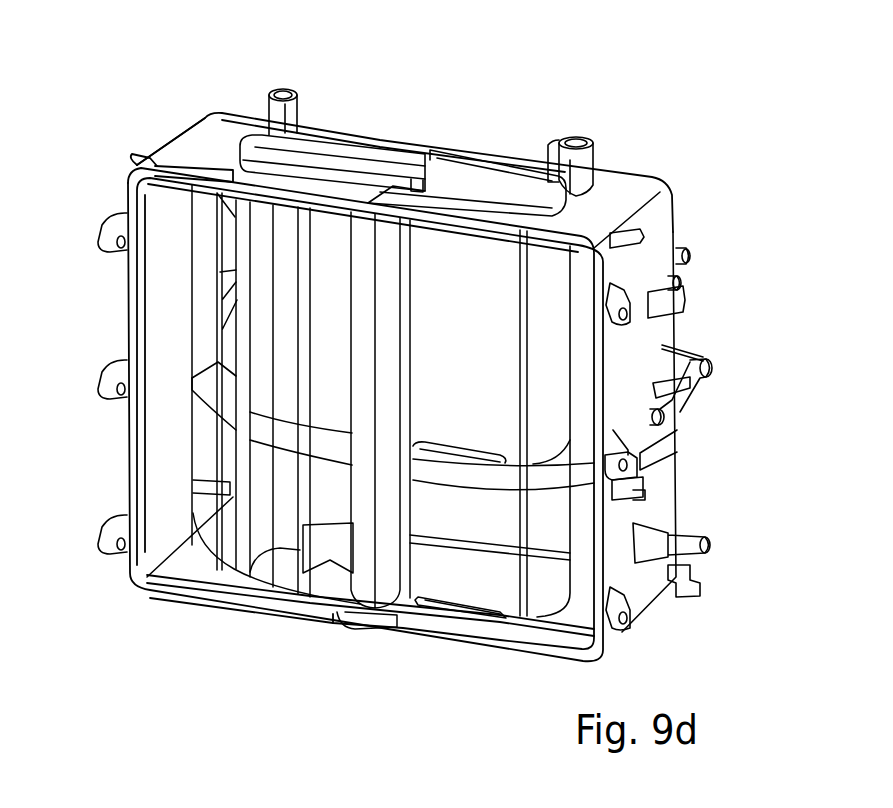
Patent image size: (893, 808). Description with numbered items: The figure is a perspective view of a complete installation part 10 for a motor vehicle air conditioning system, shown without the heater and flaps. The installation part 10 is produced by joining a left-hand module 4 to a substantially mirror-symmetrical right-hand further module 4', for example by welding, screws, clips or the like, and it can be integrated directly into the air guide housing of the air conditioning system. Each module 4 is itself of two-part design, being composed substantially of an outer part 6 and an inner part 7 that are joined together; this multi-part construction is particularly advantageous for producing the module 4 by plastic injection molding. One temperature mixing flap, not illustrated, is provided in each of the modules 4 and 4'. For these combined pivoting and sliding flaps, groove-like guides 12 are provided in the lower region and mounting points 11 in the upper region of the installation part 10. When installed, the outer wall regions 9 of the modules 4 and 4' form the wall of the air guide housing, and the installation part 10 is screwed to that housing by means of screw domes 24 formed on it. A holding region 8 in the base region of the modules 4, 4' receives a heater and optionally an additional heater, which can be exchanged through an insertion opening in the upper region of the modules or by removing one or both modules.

The module 4 is at (309, 414).
The further module 4' is at (669, 430).
The outer part 6 is at (197, 146).
The inner part 7 is at (221, 550).
The holding region 8 is at (427, 583).
The outer wall regions 9 is at (162, 447).
The installation part 10 is at (447, 115).
The mounting points 11 is at (297, 118).
The groove-like guides 12 is at (453, 583).
The screw domes 24 is at (113, 231).